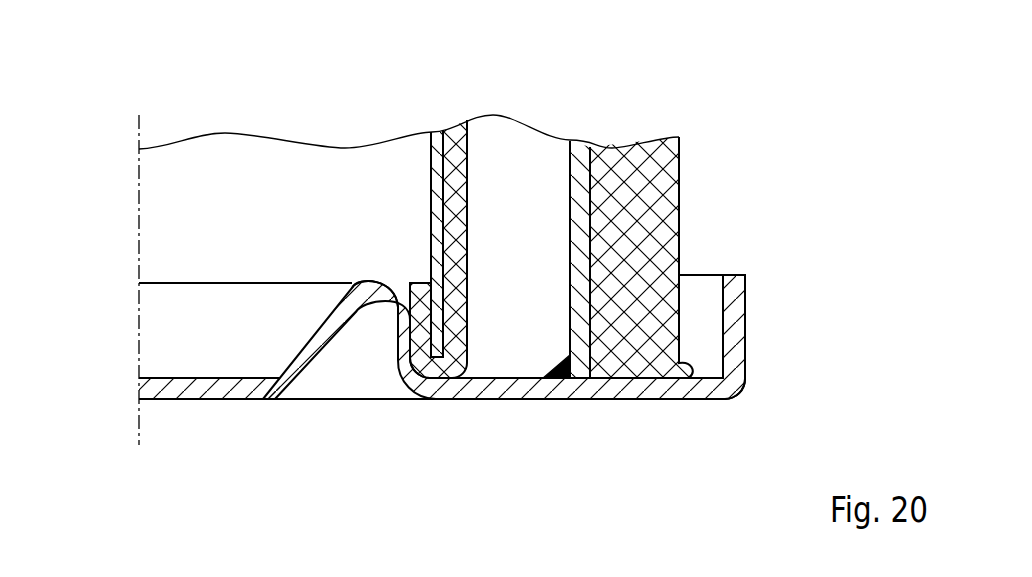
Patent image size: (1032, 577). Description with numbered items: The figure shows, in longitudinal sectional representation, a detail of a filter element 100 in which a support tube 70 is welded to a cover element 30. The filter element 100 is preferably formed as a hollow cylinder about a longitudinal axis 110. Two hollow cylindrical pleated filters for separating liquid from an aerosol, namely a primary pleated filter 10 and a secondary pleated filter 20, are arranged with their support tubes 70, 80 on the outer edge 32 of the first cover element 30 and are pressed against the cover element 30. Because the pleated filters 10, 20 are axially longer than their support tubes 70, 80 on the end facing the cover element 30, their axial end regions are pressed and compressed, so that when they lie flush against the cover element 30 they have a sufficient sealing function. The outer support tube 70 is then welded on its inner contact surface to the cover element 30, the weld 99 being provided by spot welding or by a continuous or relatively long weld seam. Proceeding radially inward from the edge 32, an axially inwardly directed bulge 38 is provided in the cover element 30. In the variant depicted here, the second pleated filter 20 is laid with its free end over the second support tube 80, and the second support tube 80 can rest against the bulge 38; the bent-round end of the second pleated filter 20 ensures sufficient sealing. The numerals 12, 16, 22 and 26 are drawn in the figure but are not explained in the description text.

The filter element 100 is at (786, 174).
The longitudinal axis 110 is at (140, 181).
The primary pleated filter 10 is at (679, 173).
The housing bottom 12 is at (630, 400).
The housing wall 16 is at (704, 353).
The secondary pleated filter 20 is at (462, 165).
The bottom bend section 22 is at (435, 400).
The sheet metal wall 26 is at (391, 339).
The first end plate 30 is at (210, 412).
The outer edge 32 is at (500, 390).
The bulge 38 is at (376, 283).
The support tube 70 is at (570, 148).
The second support tube 80 is at (430, 137).
The weld 99 is at (560, 380).